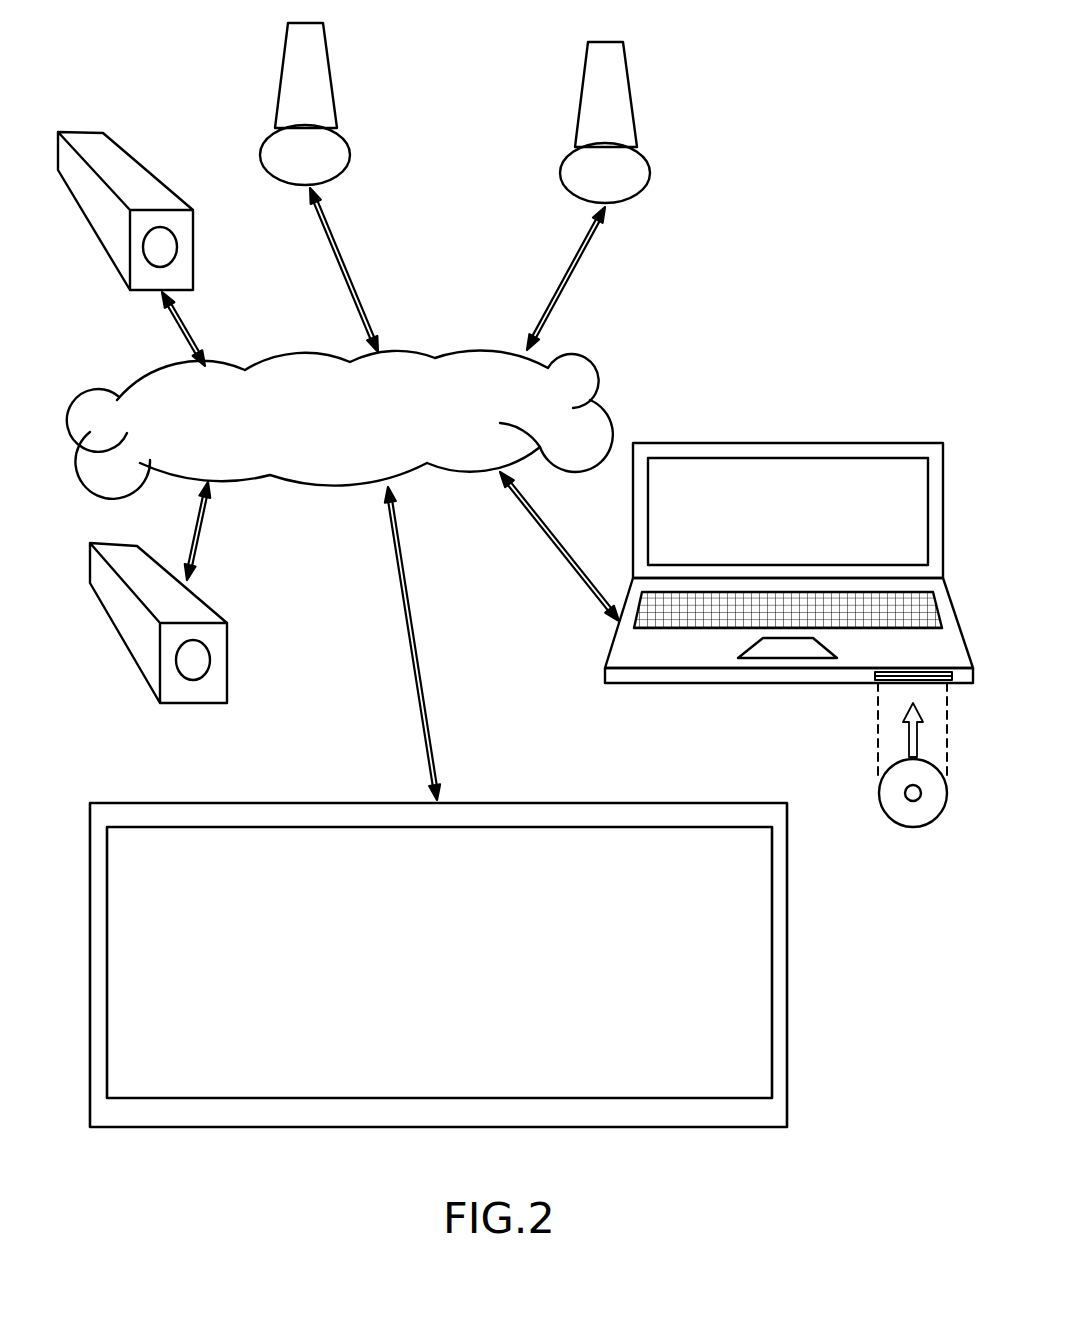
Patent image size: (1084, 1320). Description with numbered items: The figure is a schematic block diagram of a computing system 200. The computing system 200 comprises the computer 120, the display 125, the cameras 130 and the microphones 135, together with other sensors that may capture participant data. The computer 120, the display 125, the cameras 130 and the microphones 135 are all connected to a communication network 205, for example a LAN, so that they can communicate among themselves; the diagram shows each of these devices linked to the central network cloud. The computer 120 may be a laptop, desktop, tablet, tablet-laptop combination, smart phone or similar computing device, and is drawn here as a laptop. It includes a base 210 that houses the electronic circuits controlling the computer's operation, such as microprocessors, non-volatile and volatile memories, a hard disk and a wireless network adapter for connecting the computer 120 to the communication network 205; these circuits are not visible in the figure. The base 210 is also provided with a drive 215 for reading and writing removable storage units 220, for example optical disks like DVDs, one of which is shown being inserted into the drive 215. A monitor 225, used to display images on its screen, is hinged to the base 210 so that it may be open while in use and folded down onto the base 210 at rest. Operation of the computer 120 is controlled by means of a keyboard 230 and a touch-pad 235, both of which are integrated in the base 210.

The computer 120 is at (755, 562).
The display 125 is at (782, 993).
The cameras 130 is at (128, 147).
The microphones 135 is at (333, 82).
The computing system 200 is at (780, 175).
The communication network 205 is at (590, 380).
The base 210 is at (637, 683).
The drive 215 is at (875, 678).
The removable storage units 220 is at (917, 827).
The monitor 225 is at (845, 443).
The keyboard 230 is at (690, 600).
The touch-pad 235 is at (800, 643).